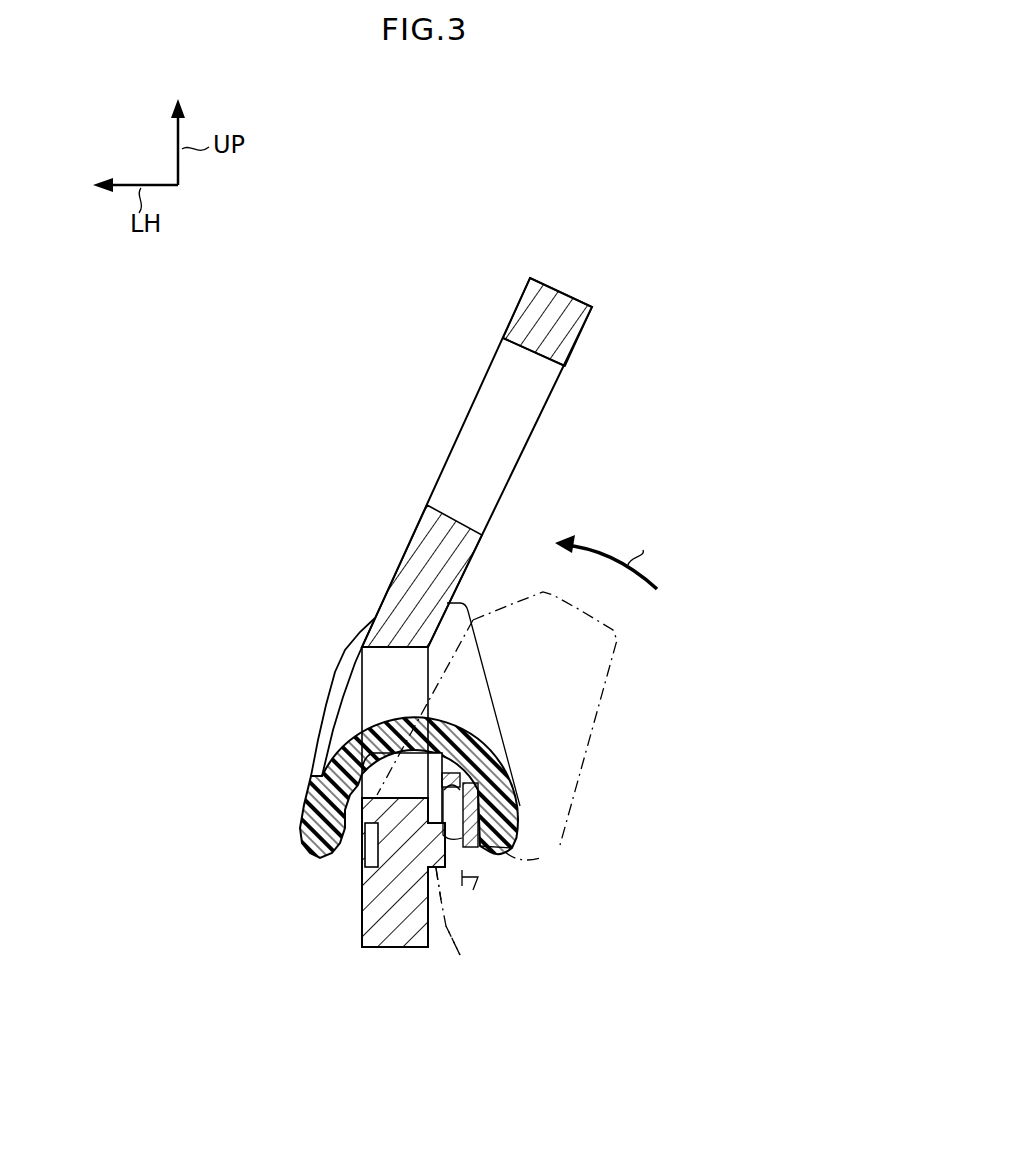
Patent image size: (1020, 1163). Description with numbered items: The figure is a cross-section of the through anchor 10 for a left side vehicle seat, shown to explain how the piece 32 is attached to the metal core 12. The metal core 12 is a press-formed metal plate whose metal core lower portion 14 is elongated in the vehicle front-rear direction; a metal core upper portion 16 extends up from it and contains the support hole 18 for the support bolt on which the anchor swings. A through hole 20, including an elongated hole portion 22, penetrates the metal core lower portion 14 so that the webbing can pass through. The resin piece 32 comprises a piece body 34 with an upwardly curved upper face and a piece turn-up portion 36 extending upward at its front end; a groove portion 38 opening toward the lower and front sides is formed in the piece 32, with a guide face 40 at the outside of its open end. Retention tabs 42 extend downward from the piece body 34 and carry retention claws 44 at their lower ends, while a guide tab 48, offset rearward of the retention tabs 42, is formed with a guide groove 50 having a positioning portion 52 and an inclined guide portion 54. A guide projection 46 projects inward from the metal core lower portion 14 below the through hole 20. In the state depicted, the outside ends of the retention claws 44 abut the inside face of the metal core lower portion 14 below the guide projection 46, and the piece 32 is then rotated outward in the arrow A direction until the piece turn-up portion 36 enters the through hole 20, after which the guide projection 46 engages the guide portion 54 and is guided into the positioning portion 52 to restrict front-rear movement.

The through anchor 10 is at (690, 259).
The metal core 12 is at (463, 503).
The metal core lower portion 14 is at (362, 932).
The metal core upper portion 16 is at (510, 321).
The support hole 18 is at (546, 358).
The through hole 20 is at (383, 661).
The elongated hole portion 22 is at (400, 652).
The piece 32 is at (447, 707).
The piece body 34 is at (352, 728).
The piece turn-up portion 36 is at (356, 643).
The groove portion 38 is at (404, 785).
The guide face 40 is at (405, 730).
The retention tab 42 is at (470, 877).
The retention claw 44 is at (458, 914).
The guide projection 46 is at (500, 854).
The guide tab 48 is at (520, 816).
The guide groove 50 is at (453, 768).
The positioning portion 52 is at (470, 798).
The guide portion 54 is at (483, 836).